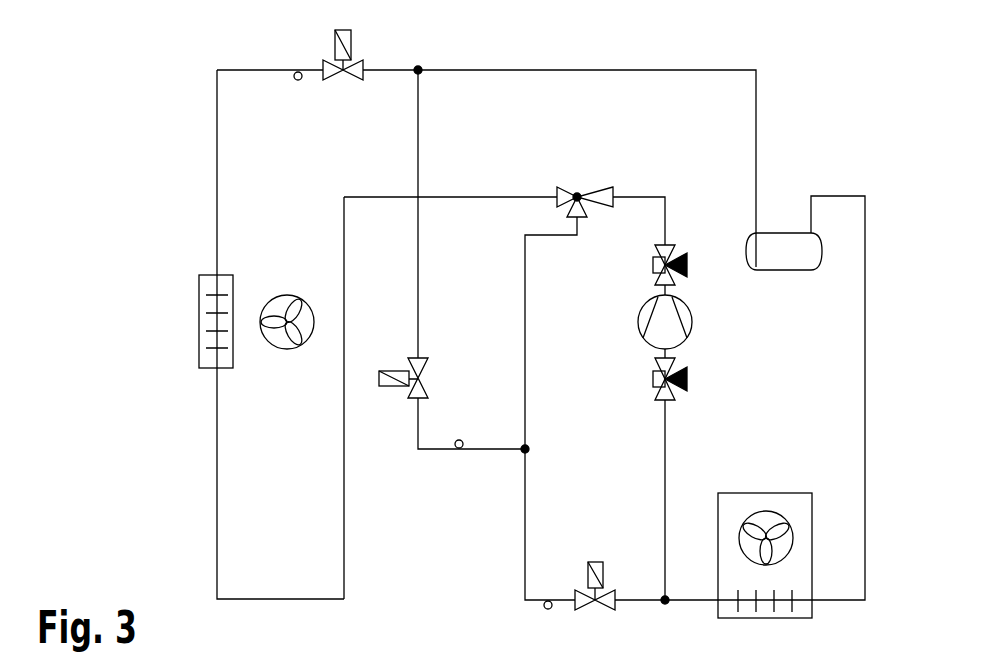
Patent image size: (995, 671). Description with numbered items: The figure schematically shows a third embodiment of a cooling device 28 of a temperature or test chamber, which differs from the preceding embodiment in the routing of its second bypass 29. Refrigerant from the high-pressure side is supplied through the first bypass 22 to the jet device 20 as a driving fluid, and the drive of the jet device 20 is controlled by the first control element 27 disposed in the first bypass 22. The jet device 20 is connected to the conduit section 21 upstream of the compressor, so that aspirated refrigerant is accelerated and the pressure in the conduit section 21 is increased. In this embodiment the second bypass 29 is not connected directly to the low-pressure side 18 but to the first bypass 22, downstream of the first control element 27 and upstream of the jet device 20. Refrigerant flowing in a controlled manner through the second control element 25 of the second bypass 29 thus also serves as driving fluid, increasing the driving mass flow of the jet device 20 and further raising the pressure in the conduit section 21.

The cooling device 28 is at (156, 60).
The low-pressure side 18 is at (352, 503).
The second bypass 29 is at (418, 160).
The second control element 25 is at (440, 382).
The jet device 20 is at (600, 194).
The conduit section 21 is at (638, 195).
The first bypass 22 is at (527, 490).
The first control element 27 is at (577, 584).